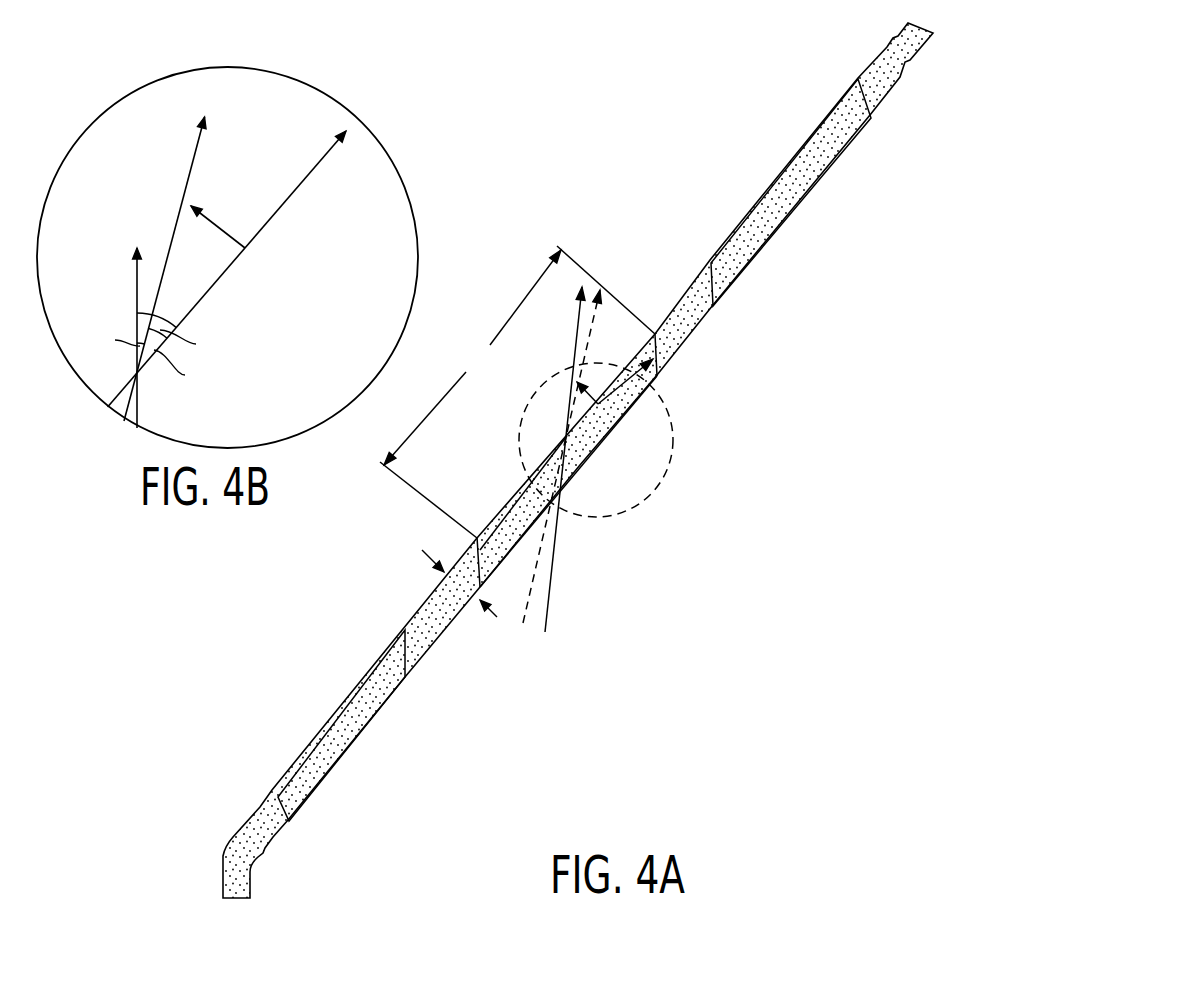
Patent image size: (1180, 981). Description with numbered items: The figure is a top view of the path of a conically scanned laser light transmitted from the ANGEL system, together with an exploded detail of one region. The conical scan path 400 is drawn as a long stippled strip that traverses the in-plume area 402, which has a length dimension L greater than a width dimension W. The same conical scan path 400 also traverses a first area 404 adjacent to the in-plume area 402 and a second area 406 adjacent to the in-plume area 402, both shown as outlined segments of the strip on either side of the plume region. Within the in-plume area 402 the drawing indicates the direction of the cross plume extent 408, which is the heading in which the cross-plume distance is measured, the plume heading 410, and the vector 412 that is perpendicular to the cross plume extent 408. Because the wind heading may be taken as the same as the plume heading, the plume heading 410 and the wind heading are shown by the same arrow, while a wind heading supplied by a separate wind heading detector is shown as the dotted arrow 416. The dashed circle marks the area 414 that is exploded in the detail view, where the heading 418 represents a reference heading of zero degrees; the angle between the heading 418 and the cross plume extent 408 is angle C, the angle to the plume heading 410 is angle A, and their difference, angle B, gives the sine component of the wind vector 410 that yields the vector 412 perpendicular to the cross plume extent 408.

In FIG. 4A, the conical scan path 400 is at (425, 648).
In FIG. 4A, the in-plume area 402 is at (687, 461).
In FIG. 4A, the first area 404 is at (357, 743).
In FIG. 4A, the second area 406 is at (788, 218).
In FIG. 4A, the cross plume extent 408 is at (620, 400).
In FIG. 4B, the cross plume extent 408 is at (282, 210).
In FIG. 4A, the plume heading 410 is at (553, 577).
In FIG. 4B, the plume heading 410 is at (192, 165).
In FIG. 4A, the vector 412 is at (660, 366).
In FIG. 4B, the vector 412 is at (225, 232).
In FIG. 4A, the area 414 is at (637, 513).
In FIG. 4B, the area 414 is at (383, 147).
In FIG. 4A, the dotted arrow 416 is at (606, 310).
In FIG. 4B, the heading 418 is at (137, 287).